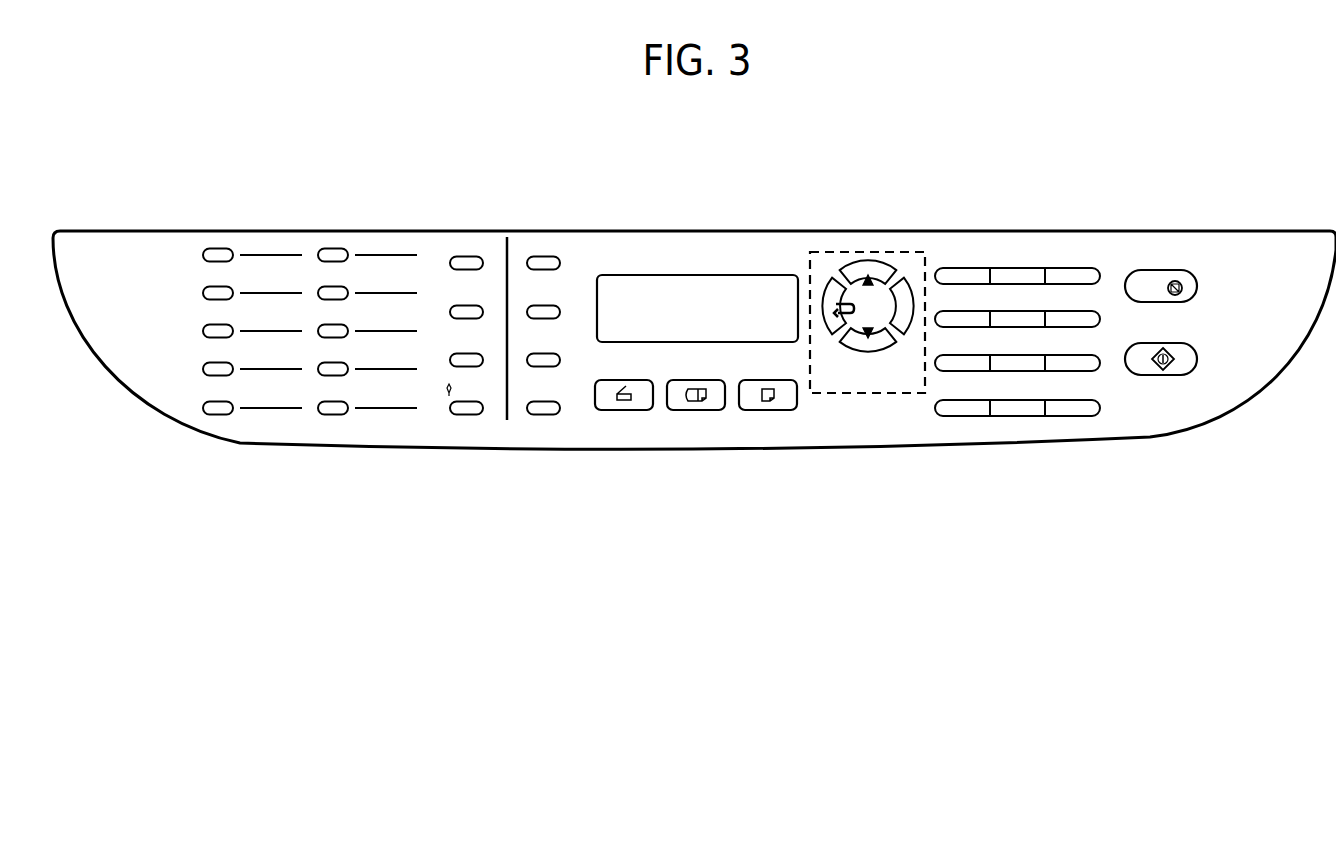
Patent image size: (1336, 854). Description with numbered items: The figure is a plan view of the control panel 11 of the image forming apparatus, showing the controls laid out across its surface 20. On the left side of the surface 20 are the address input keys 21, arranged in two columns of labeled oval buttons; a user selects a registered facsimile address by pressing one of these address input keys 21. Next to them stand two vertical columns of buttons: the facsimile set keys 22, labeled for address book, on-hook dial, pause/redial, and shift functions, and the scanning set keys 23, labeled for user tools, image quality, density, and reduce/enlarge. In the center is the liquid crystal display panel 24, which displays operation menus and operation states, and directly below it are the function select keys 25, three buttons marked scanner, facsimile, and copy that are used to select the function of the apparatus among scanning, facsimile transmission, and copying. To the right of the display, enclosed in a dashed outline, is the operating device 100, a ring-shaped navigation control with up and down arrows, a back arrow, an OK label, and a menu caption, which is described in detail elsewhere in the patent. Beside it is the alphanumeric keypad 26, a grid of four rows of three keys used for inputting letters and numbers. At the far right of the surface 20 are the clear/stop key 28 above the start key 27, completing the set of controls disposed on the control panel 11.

The control panel 11 is at (953, 200).
The surface 20 is at (1260, 236).
The address input keys 21 is at (418, 224).
The facsimile set keys 22 is at (465, 226).
The scanning set keys 23 is at (545, 226).
The liquid crystal display (LCD) panel 24 is at (698, 275).
The function select keys 25 is at (590, 422).
The operating device 100 is at (858, 250).
The alphanumeric keypad 26 is at (1107, 422).
The start key 27 is at (1197, 360).
The clear/stop key 28 is at (1197, 287).